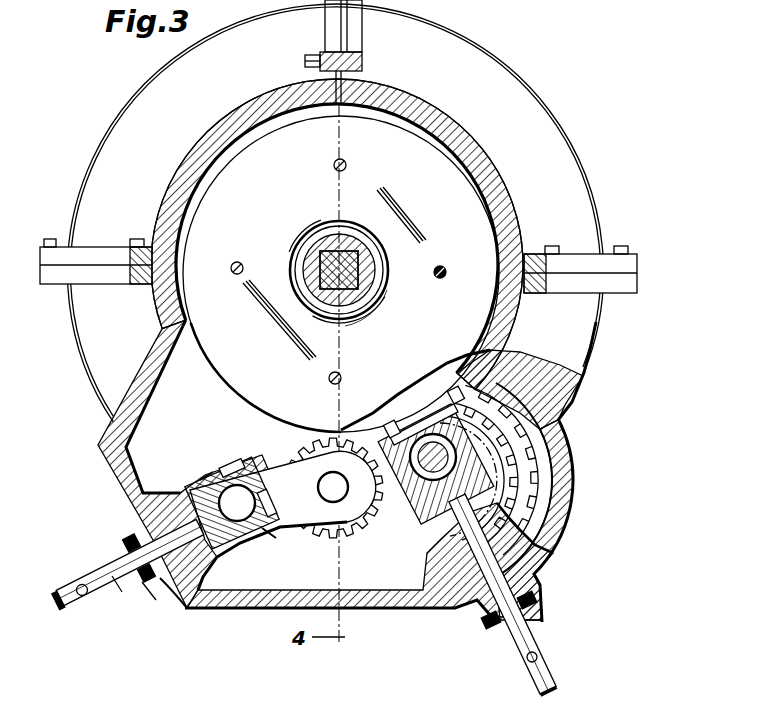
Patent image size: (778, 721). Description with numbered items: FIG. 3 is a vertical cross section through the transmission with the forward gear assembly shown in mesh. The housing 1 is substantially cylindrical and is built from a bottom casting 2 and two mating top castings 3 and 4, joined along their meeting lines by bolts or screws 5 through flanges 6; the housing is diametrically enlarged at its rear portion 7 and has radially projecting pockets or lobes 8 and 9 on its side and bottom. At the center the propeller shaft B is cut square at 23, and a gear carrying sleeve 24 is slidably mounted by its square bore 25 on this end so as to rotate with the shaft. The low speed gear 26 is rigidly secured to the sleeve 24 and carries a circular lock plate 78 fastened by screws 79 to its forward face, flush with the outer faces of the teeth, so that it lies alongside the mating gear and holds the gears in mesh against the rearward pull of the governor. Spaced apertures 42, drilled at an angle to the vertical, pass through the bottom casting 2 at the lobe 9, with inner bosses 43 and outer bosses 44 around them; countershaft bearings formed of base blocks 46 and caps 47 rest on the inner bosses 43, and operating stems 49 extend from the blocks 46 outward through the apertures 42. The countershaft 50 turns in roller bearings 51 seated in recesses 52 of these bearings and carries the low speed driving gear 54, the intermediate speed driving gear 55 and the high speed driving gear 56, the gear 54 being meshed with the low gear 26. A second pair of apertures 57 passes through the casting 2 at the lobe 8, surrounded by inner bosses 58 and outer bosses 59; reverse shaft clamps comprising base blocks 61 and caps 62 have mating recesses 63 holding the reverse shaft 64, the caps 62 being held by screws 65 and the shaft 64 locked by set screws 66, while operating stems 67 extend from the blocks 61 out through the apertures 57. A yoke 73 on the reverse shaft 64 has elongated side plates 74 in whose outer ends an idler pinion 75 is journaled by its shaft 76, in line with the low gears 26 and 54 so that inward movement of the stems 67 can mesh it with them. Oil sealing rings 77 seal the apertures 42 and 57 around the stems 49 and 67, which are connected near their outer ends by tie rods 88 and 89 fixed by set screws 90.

The housing 1 is at (66, 196).
The bottom casting 2 is at (262, 610).
The top casting 3 is at (207, 126).
The top casting 4 is at (497, 166).
The bolts or screws 5 is at (614, 246).
The flanges 6 is at (640, 282).
The enlarged rear portion 7 is at (482, 54).
The pocket or lobe 8 is at (110, 476).
The pocket or lobe 9 is at (578, 488).
The squared end portion 23 is at (380, 287).
The gear carrying sleeve 24 is at (355, 233).
The square bore 25 is at (378, 268).
The low speed gear 26 is at (438, 360).
The apertures 42 is at (515, 568).
The inner bosses 43 is at (540, 532).
The outer bosses 44 is at (543, 594).
The base blocks 46 is at (402, 548).
The caps 47 is at (527, 385).
The operating stems 49 is at (528, 625).
The countershaft 50 is at (555, 394).
The roller bearings 51 is at (540, 438).
The recesses 52 is at (552, 468).
The low speed driving gear 54 is at (515, 366).
The intermediate speed driving gear 55 is at (545, 412).
The high speed driving gear 56 is at (560, 416).
The apertures 57 is at (160, 533).
The inner bosses 58 is at (206, 600).
The outer bosses 59 is at (156, 592).
The base blocks 61 is at (222, 550).
The caps 62 is at (234, 462).
The mating recesses 63 is at (205, 478).
The reverse shaft 64 is at (258, 540).
The screws 65 is at (283, 536).
The set screws 66 is at (267, 490).
The operating stems 67 is at (118, 594).
The yoke 73 is at (307, 535).
The side plates 74 is at (285, 473).
The idler pinion 75 is at (348, 530).
The shaft 76 is at (362, 545).
The oil sealing rings 77 is at (124, 546).
The circular lock plate 78 is at (398, 140).
The screws 79 is at (340, 168).
The tie rod 88 is at (538, 657).
The tie rod 89 is at (84, 602).
The set screws 90 is at (54, 606).
The propeller shaft B is at (370, 247).